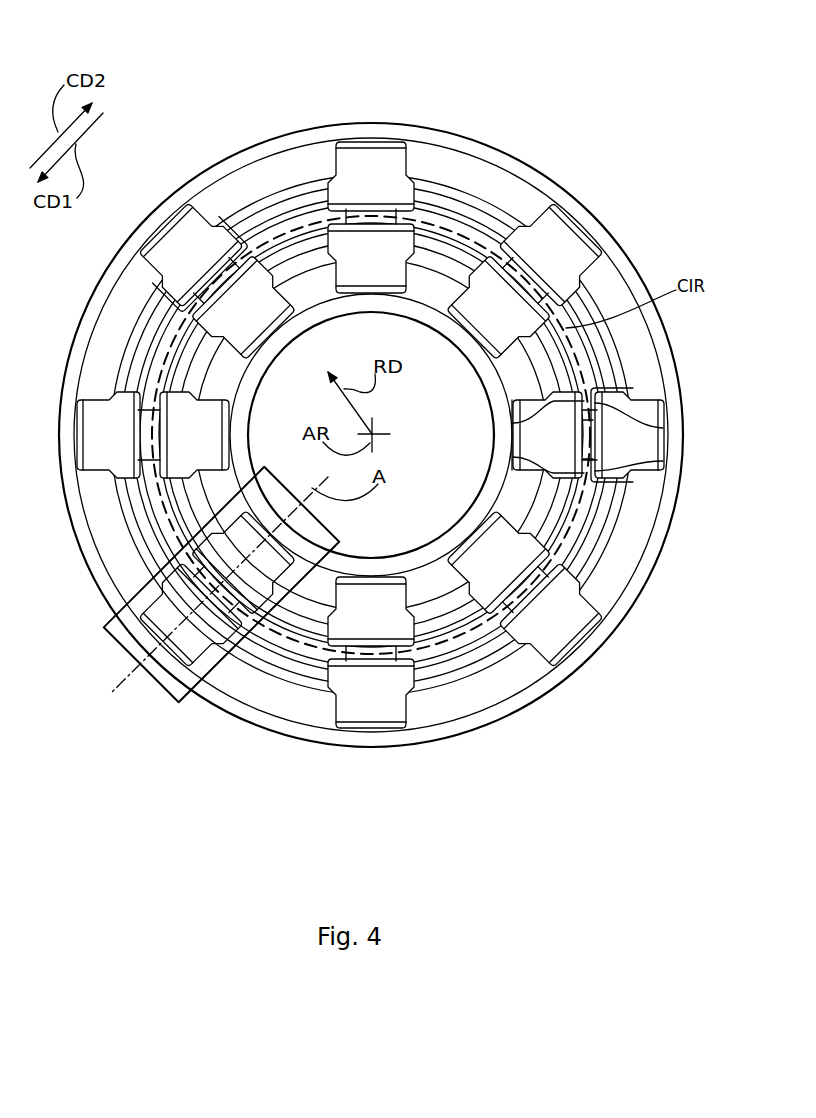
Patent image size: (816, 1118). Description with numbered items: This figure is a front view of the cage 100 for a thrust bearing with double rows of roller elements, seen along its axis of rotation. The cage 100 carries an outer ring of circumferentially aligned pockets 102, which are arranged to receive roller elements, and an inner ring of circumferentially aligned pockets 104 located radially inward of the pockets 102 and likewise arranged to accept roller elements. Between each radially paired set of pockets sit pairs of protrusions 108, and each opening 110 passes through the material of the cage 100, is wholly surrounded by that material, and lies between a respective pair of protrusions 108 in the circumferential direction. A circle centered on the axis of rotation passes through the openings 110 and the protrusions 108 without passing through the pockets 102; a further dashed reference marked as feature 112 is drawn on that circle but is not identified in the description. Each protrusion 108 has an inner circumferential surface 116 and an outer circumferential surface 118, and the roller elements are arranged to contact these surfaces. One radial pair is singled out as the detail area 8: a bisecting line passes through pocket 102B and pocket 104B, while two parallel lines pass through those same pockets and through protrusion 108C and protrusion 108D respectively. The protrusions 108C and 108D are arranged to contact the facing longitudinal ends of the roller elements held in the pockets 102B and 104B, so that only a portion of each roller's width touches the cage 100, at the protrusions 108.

The cage 100 is at (631, 58).
The circumferentially aligned pockets 102 is at (370, 435).
The circumferentially aligned pockets 104 is at (372, 435).
The pocket 102B is at (176, 633).
The pocket 104B is at (200, 530).
The pairs of protrusions 108 is at (595, 388).
The protrusion 108C is at (200, 693).
The protrusion 108D is at (165, 612).
The openings 110 is at (588, 443).
The circumferential reference circle 112 is at (284, 226).
The inner circumferential surface 116 is at (612, 398).
The outer circumferential surface 118 is at (512, 423).
The detail area 8 is at (152, 676).